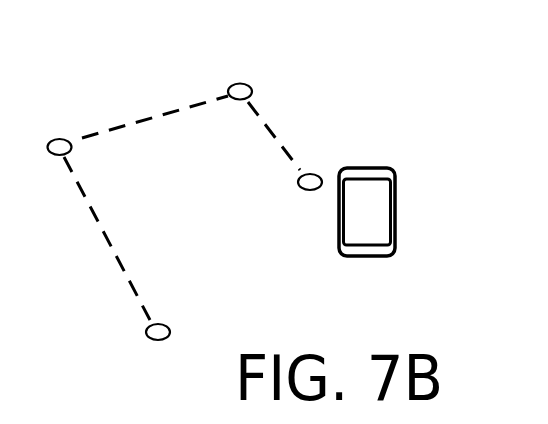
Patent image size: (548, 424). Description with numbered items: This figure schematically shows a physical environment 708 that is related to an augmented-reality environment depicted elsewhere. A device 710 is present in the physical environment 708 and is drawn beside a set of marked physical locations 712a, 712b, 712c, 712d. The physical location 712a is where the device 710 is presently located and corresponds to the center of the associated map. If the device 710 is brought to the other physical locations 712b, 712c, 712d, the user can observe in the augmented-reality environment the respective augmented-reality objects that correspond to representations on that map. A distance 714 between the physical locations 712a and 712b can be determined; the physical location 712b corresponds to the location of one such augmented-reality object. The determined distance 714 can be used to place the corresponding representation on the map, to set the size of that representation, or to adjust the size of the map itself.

The physical environment 708 is at (468, 94).
The device 710 is at (397, 222).
The physical location 712a is at (310, 173).
The physical location 712b is at (240, 83).
The physical location 712c is at (66, 140).
The physical location 712d is at (160, 324).
The distance 714 is at (268, 127).